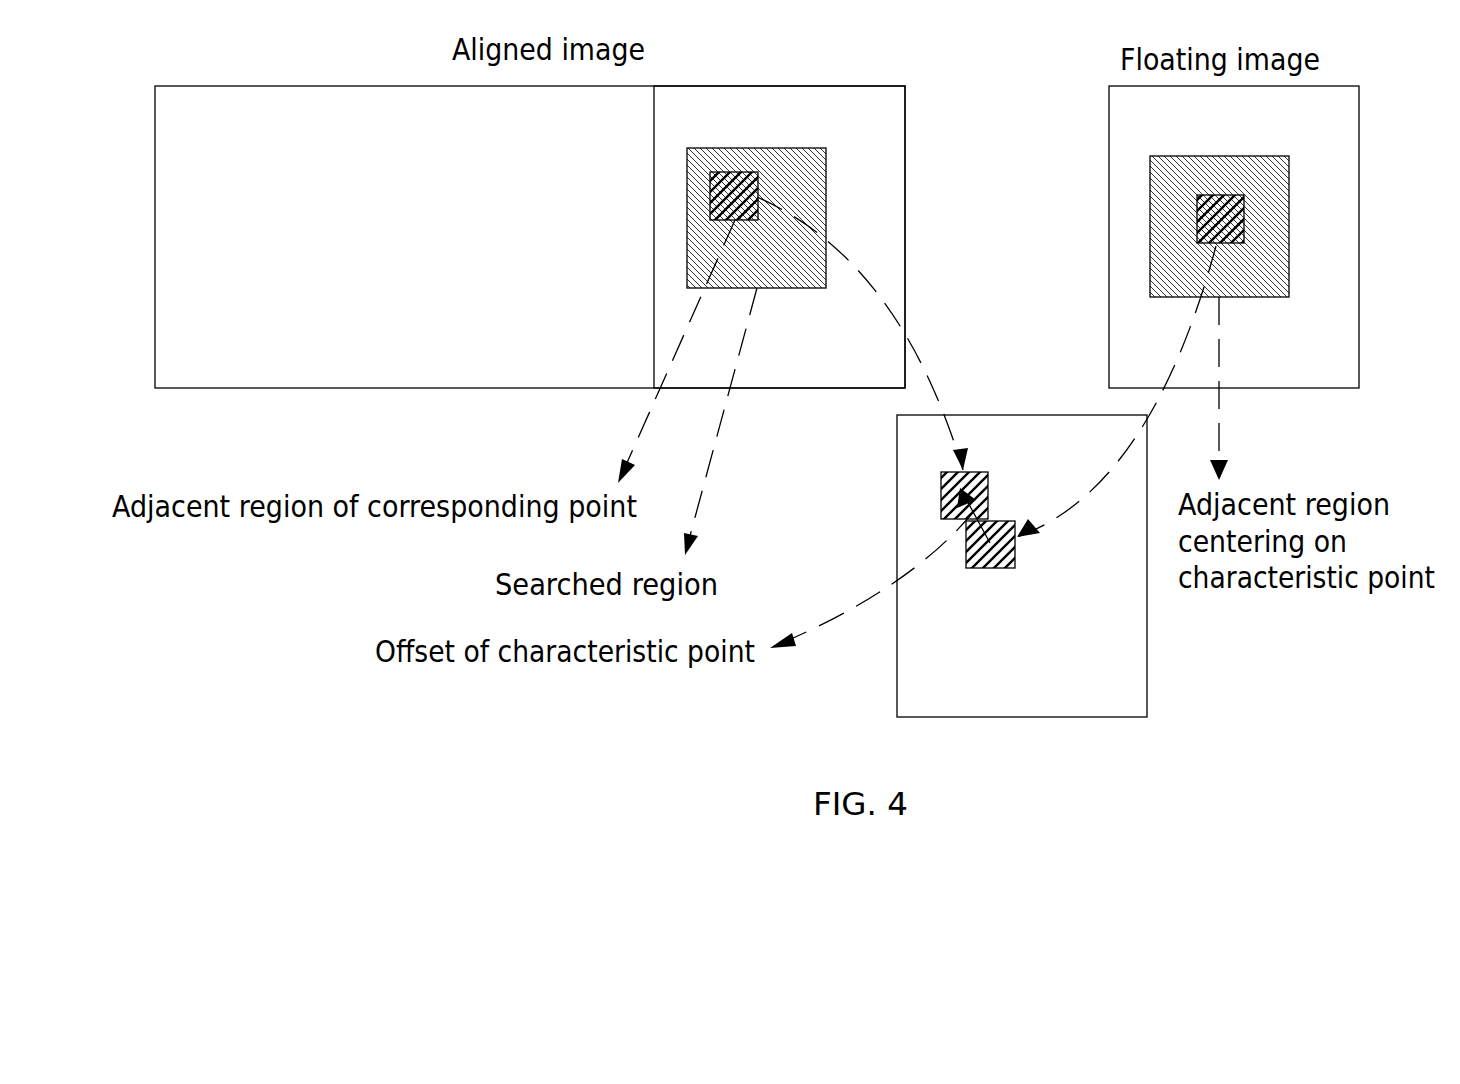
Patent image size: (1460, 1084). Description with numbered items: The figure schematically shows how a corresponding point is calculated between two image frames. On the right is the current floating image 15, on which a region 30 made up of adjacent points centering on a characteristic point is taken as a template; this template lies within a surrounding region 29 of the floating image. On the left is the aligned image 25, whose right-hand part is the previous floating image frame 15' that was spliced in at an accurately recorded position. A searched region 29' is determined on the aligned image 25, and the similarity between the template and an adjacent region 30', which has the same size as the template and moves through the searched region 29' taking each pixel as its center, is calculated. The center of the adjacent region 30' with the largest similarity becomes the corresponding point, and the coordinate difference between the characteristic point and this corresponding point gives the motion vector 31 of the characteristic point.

The aligned image 25 is at (296, 85).
The previous floating image frame 15' is at (801, 207).
The searched region 29' is at (788, 193).
The adjacent region 30' is at (760, 161).
The current floating image 15 is at (1259, 206).
The region around characteristic point 29 is at (1249, 200).
The region of adjacent points centering on characteristic point 30 is at (1186, 179).
The motion vector 31 is at (992, 520).